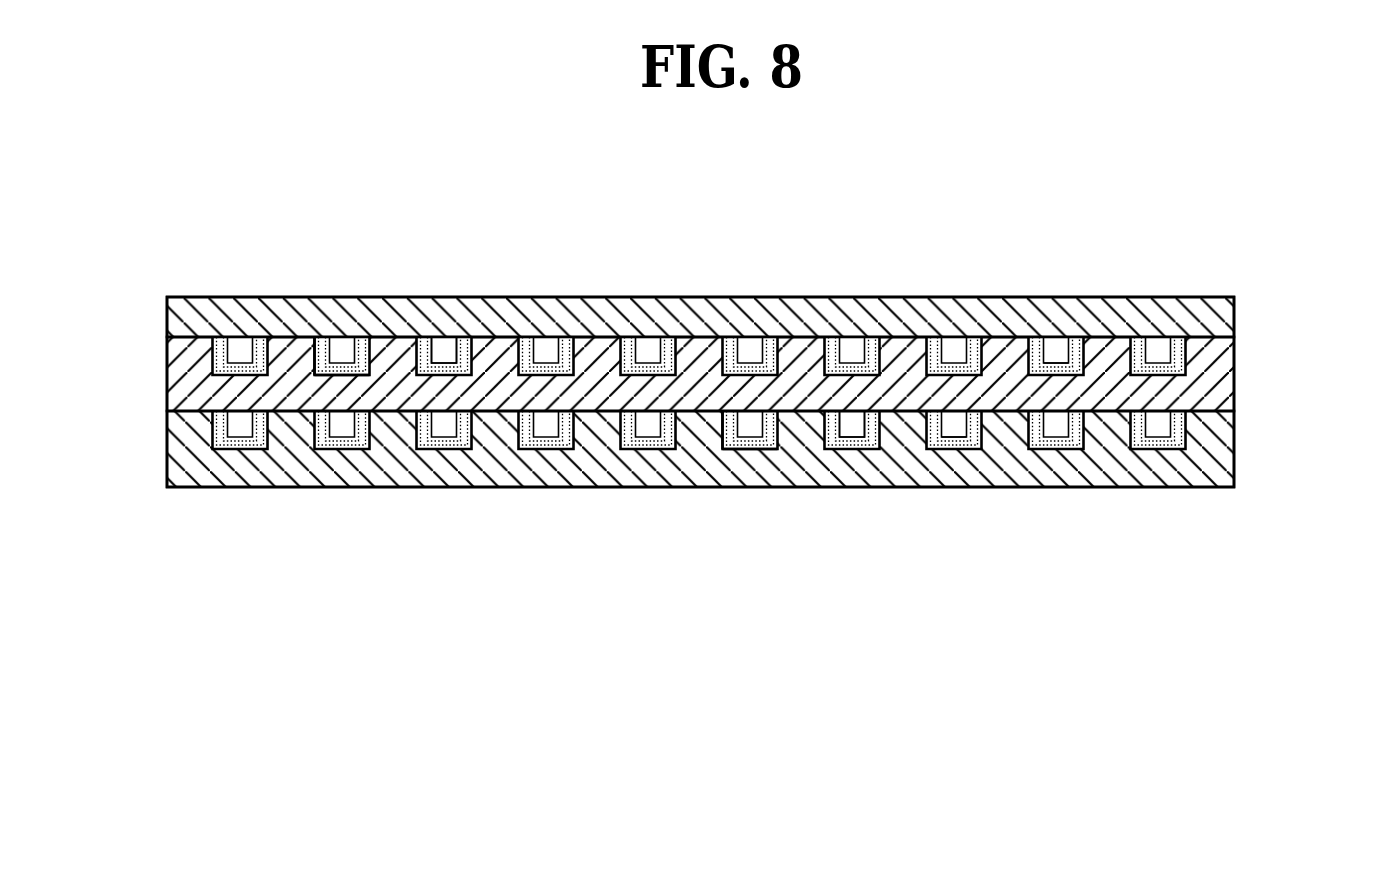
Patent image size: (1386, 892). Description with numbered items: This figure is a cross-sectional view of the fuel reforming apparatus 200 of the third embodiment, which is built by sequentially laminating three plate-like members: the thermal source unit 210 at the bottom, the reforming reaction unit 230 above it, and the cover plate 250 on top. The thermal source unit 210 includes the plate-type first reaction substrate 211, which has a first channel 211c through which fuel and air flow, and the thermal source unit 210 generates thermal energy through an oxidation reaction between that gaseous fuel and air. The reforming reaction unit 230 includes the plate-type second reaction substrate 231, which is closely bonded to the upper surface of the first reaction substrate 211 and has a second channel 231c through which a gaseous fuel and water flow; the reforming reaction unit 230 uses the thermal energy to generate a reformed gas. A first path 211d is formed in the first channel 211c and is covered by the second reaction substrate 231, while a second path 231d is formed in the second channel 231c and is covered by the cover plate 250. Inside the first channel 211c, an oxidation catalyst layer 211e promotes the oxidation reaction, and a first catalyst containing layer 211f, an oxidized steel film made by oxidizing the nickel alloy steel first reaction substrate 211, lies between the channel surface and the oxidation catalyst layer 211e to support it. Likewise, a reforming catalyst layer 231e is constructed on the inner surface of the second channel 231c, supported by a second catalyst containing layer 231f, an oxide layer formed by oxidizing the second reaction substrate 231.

The fuel reforming apparatus 200 is at (740, 220).
The thermal source unit 210 is at (1258, 443).
The first reaction substrate 211 is at (166, 456).
The first channel 211c is at (858, 447).
The first path 211d is at (954, 452).
The oxidation catalyst layer 211e is at (722, 427).
The first catalyst containing layer 211f is at (778, 435).
The reforming reaction unit 230 is at (1258, 363).
The second reaction substrate 231 is at (166, 379).
The second channel 231c is at (443, 353).
The second path 231d is at (1059, 378).
The reforming catalyst layer 231e is at (311, 349).
The second catalyst containing layer 231f is at (353, 364).
The cover plate 250 is at (166, 323).